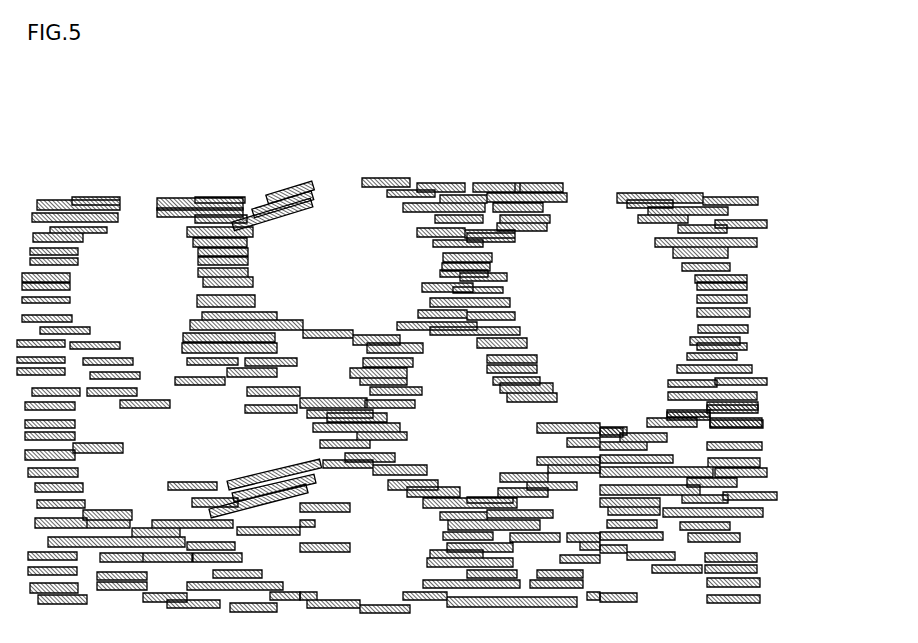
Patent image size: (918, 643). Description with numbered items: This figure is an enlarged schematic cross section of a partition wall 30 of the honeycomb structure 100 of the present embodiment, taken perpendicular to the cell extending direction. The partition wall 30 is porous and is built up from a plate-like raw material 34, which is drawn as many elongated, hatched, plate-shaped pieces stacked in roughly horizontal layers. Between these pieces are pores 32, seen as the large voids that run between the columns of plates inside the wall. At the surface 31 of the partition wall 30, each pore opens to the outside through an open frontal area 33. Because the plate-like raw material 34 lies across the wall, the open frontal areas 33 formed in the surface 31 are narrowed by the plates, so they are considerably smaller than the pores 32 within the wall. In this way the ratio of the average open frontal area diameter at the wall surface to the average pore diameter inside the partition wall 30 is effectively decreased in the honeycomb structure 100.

The honeycomb structure 100 is at (806, 89).
The partition wall 30 is at (485, 186).
The surface 31 is at (268, 158).
The pore 32 is at (504, 352).
The open frontal area 33 is at (392, 258).
The plate-like raw material 34 is at (278, 239).